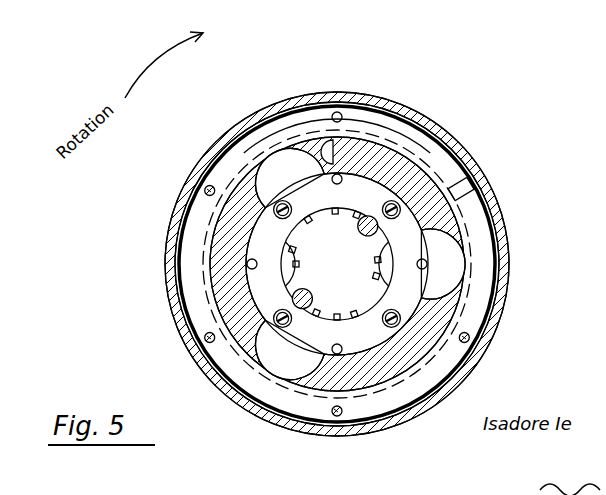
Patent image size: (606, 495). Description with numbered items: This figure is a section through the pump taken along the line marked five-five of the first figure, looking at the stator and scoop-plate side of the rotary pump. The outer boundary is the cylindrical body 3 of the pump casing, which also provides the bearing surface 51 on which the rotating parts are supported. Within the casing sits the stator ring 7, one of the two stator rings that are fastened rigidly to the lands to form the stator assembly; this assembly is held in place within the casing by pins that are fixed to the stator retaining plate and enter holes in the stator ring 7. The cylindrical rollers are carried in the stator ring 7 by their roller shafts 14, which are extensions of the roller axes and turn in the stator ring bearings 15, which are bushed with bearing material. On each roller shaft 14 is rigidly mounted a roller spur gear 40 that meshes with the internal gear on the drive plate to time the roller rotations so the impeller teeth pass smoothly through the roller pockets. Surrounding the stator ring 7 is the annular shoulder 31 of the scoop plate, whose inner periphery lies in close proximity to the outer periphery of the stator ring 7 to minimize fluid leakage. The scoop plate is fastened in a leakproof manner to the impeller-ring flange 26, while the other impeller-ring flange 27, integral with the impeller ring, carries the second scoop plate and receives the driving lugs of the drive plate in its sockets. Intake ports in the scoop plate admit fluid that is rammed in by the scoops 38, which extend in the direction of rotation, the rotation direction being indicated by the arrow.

The cylindrical body 3 is at (418, 112).
The bearing surface 51 is at (447, 143).
The impeller-ring flange 26 is at (485, 265).
The impeller-ring flange 27 is at (497, 203).
The annular shoulder 31 is at (242, 208).
The scoops 38 is at (270, 175).
The stator ring 7 is at (267, 235).
The roller shaft 14 is at (335, 174).
The stator ring bearing 15 is at (247, 265).
The roller spur gear 40 is at (338, 305).